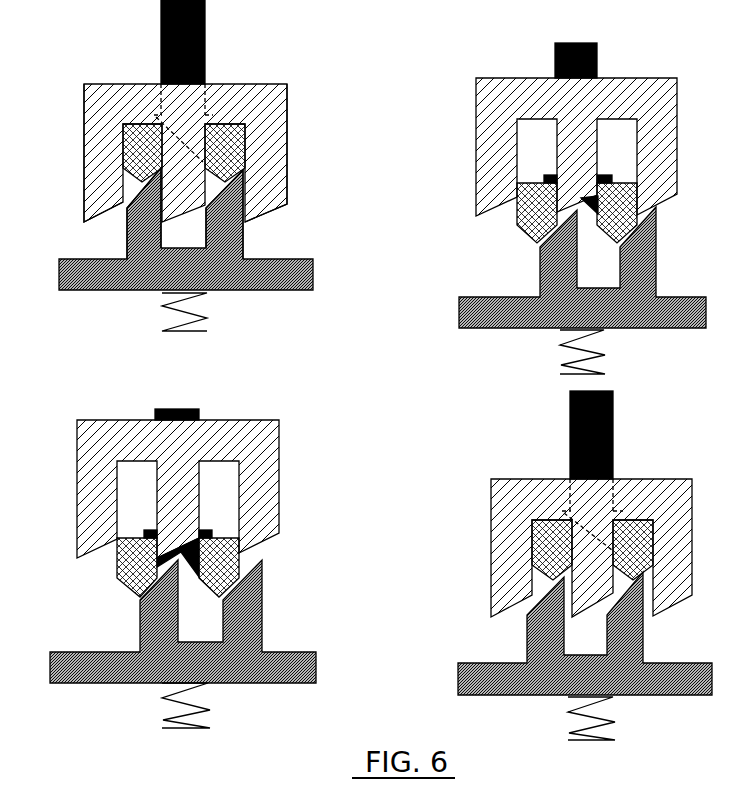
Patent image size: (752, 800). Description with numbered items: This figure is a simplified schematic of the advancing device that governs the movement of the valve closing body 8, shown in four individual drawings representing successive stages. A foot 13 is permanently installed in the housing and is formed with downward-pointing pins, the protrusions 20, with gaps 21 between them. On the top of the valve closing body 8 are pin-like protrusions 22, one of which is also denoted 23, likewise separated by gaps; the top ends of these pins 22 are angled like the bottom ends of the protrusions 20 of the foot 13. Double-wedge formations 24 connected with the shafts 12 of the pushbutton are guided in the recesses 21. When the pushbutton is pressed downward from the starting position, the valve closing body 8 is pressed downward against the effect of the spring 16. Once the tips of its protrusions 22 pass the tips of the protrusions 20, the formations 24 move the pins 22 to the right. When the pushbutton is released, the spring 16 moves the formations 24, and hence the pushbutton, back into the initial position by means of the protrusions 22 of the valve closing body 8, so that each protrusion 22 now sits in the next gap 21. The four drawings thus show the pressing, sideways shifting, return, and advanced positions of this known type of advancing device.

The valve closing body 8 is at (313, 274).
The shaft of the pushbutton 12 is at (206, 36).
The foot 13 is at (272, 123).
The spring 16 is at (203, 315).
The protrusion of the foot 20 is at (278, 180).
The gap 21 is at (130, 190).
The pin-like protrusion 22 is at (230, 235).
The left prong 23 is at (182, 238).
The double-wedge formation 24 is at (142, 150).